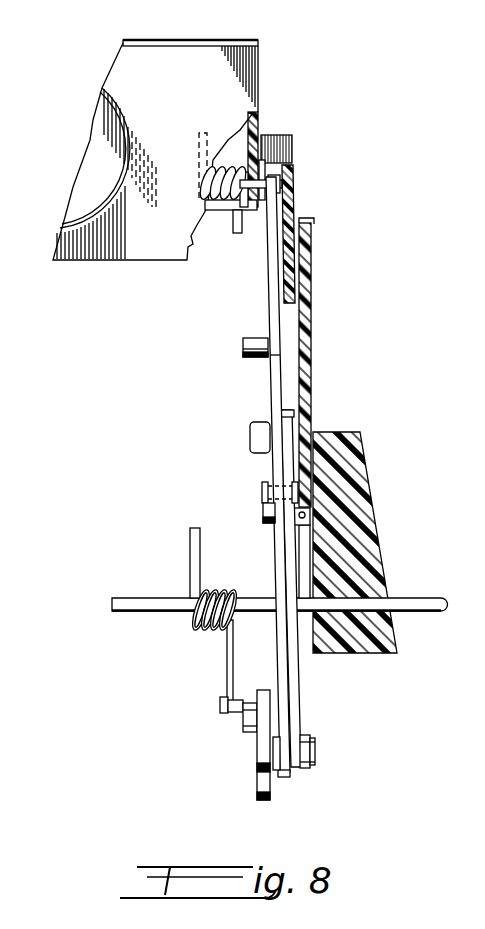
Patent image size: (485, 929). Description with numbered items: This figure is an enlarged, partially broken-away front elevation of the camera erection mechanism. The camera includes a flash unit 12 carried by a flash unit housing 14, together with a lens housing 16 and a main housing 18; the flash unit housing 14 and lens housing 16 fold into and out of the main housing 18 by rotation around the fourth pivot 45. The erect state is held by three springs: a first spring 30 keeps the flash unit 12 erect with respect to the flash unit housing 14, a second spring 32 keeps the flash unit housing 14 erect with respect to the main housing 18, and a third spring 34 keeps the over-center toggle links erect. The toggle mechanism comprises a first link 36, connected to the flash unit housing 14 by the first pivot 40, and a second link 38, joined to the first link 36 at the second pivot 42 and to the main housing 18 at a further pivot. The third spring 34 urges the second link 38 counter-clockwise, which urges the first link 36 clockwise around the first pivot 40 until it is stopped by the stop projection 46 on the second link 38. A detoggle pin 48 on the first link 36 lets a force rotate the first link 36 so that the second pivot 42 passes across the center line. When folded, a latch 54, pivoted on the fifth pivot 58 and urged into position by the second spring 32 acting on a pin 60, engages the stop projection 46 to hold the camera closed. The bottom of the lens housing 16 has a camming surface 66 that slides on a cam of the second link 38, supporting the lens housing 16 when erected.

The flash unit 12 is at (258, 83).
The flash unit housing 14 is at (293, 157).
The lens housing 16 is at (311, 312).
The main housing 18 is at (380, 542).
The first spring 30 is at (236, 228).
The second spring 32 is at (198, 630).
The third spring 34 is at (302, 768).
The first link 36 is at (271, 378).
The second link 38 is at (276, 556).
The first pivot 40 is at (263, 182).
The second pivot 42 is at (262, 493).
The fourth pivot 45 is at (420, 600).
The stop projection 46 is at (257, 425).
The detoggle pin 48 is at (243, 340).
The latch 54 is at (256, 780).
The fifth pivot 58 is at (243, 732).
The pin 60 is at (220, 703).
The camming surface 66 is at (308, 516).